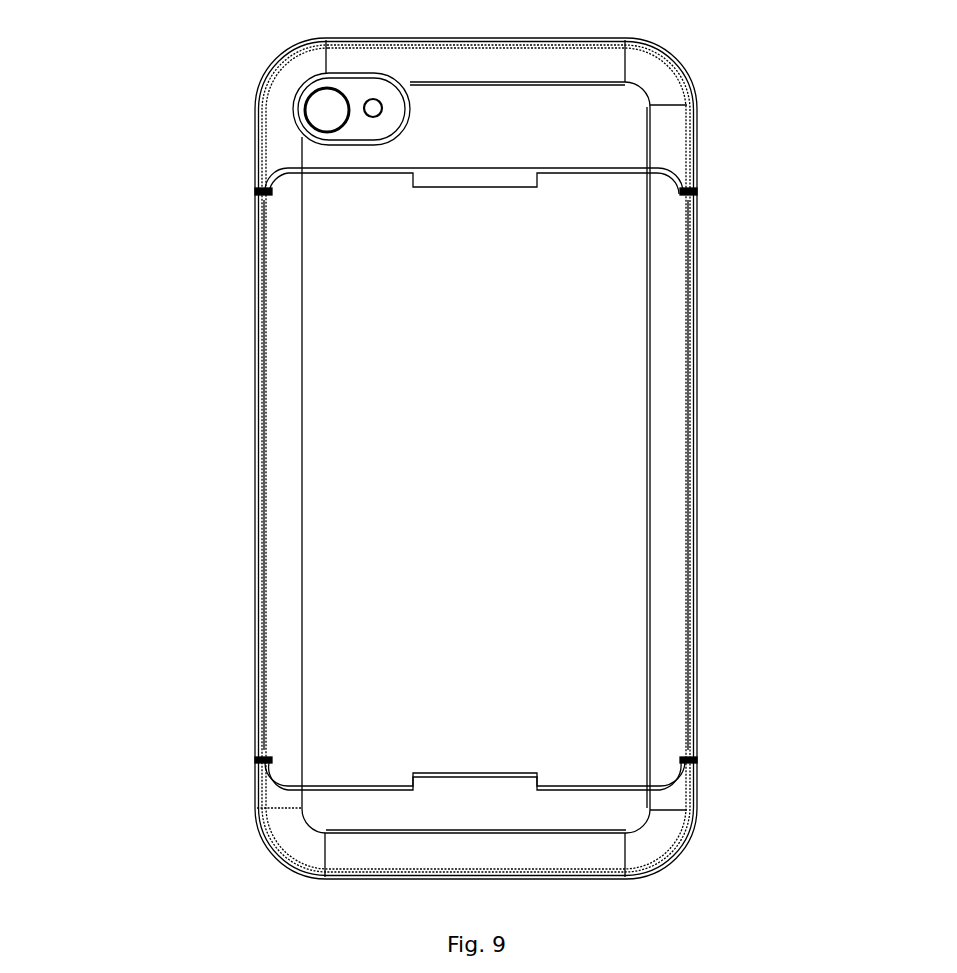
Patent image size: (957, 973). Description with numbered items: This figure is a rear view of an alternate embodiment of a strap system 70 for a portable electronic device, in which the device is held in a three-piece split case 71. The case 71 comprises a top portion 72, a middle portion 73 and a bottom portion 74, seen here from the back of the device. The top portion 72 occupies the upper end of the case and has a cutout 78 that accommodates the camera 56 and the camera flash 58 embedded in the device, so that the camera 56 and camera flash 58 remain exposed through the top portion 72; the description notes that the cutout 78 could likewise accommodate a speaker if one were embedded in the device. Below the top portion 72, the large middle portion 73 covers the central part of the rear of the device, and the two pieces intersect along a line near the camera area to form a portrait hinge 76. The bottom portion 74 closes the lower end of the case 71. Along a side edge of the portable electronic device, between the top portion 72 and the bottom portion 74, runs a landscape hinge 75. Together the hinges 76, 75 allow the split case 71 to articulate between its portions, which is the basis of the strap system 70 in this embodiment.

The strap system 70 is at (162, 591).
The case 71 is at (490, 529).
The top portion 72 is at (598, 145).
The middle portion 73 is at (558, 589).
The bottom portion 74 is at (328, 807).
The landscape hinge 75 is at (688, 427).
The portrait hinge 76 is at (330, 165).
The cutout 78 is at (400, 102).
The camera 56 is at (328, 111).
The camera flash 58 is at (375, 110).